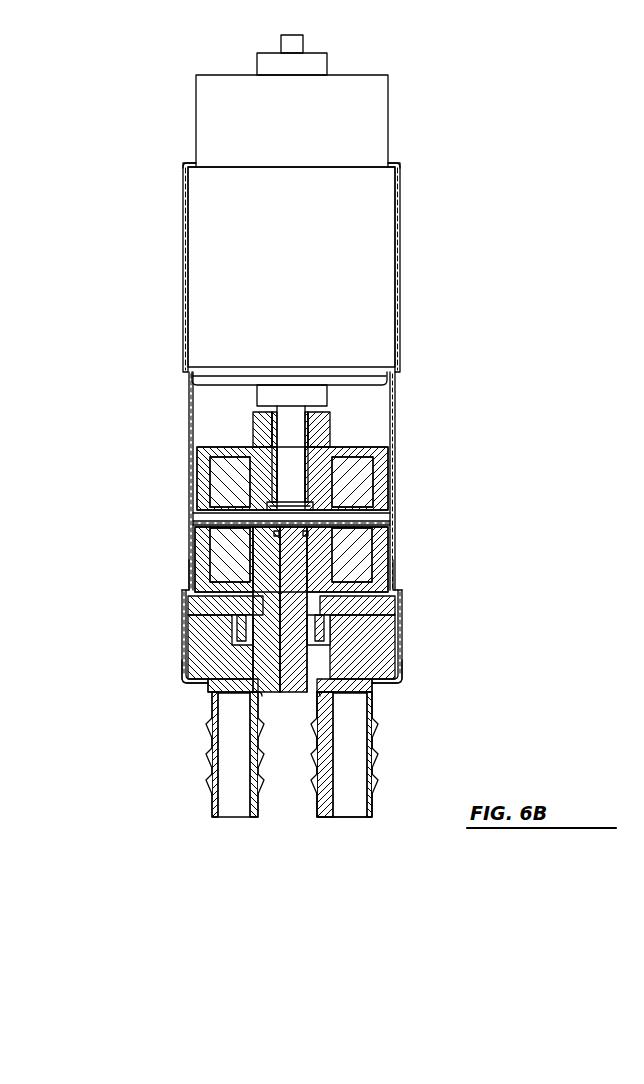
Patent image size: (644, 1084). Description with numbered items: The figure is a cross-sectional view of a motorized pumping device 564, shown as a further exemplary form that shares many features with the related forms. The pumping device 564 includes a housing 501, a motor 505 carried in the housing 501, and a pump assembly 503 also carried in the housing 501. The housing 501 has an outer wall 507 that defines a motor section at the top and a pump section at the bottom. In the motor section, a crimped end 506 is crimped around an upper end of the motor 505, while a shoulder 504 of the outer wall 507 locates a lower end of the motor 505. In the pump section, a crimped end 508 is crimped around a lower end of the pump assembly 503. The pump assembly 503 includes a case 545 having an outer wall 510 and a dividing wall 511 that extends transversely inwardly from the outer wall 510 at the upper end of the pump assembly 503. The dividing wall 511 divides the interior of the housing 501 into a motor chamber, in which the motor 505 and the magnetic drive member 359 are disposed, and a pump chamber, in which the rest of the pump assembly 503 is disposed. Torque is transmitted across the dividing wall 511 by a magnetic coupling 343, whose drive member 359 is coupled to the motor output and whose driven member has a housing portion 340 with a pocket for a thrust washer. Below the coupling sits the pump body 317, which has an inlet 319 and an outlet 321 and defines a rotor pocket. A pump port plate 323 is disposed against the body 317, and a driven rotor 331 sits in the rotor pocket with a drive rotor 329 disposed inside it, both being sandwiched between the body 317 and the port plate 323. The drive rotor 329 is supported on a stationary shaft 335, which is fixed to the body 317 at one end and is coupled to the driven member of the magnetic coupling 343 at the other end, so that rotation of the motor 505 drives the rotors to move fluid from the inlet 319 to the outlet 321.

The motorized pumping device 564 is at (155, 108).
The housing 501 is at (172, 221).
The crimped end 506 is at (398, 163).
The motor 505 is at (360, 285).
The shoulder 504 is at (400, 370).
The outer wall 507 is at (393, 397).
The magnetic coupling 343 is at (182, 519).
The magnetic drive member 359 is at (368, 438).
The dividing wall 511 is at (350, 525).
The housing portion 340 is at (197, 538).
The outer wall 510 is at (185, 565).
The pump port plate 323 is at (380, 605).
The drive rotor 329 is at (232, 628).
The driven rotor 331 is at (350, 625).
The case 545 is at (178, 650).
The crimped end 508 is at (395, 687).
The pump assembly 503 is at (190, 706).
The pump body 317 is at (372, 685).
The inlet 319 is at (237, 788).
The outlet 321 is at (347, 788).
The stationary shaft 335 is at (287, 662).